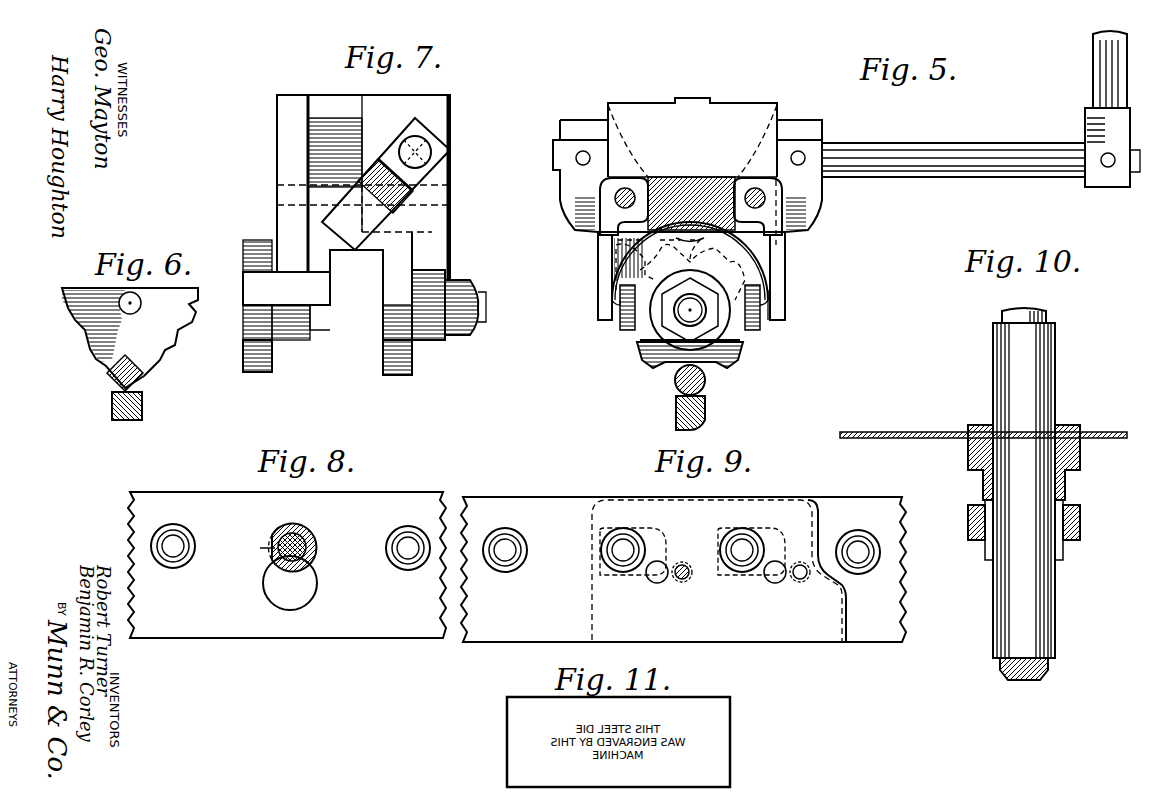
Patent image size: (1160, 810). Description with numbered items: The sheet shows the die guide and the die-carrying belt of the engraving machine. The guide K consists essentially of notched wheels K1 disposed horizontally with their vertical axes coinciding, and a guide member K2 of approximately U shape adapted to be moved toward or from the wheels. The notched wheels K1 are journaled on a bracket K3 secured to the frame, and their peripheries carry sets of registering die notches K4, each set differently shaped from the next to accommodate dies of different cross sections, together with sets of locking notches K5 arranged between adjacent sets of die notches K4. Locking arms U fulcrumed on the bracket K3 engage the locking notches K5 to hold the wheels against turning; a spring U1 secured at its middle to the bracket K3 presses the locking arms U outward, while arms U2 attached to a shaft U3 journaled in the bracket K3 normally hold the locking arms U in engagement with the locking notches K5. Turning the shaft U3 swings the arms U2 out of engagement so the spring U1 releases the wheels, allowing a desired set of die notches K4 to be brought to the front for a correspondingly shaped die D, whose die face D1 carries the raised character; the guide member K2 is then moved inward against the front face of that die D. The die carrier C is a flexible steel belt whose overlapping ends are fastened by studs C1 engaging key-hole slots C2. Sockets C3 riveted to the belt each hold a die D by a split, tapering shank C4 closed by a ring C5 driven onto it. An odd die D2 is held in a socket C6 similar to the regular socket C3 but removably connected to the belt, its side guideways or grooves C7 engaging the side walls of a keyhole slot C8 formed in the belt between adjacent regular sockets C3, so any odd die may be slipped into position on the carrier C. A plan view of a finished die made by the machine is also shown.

In FIG. 7, the guide K is at (374, 180).
In FIG. 5, the guide K is at (687, 152).
In FIG. 7, the notched wheels K1 is at (375, 380).
In FIG. 6, the notched wheels K1 is at (72, 288).
In FIG. 5, the notched wheels K1 is at (740, 362).
In FIG. 6, the guide member K2 is at (112, 410).
In FIG. 5, the guide member K2 is at (676, 422).
In FIG. 7, the bracket K3 is at (290, 152).
In FIG. 5, the bracket K3 is at (657, 114).
In FIG. 6, the die notches K4 is at (200, 334).
In FIG. 5, the die notches K4 is at (745, 352).
In FIG. 6, the locking notches K5 is at (176, 374).
In FIG. 5, the locking notches K5 is at (652, 370).
In FIG. 7, the locking arms U is at (318, 290).
In FIG. 5, the locking arms U is at (1140, 75).
In FIG. 5, the spring U1 is at (740, 258).
In FIG. 7, the arms U2 is at (375, 226).
In FIG. 5, the arms U2 is at (810, 234).
In FIG. 7, the shaft U3 is at (422, 152).
In FIG. 5, the shaft U3 is at (898, 150).
In FIG. 6, the die D is at (118, 382).
In FIG. 5, the die D is at (676, 386).
In FIG. 8, the die D is at (408, 548).
In FIG. 9, the die D is at (623, 556).
In FIG. 10, the die D is at (1005, 370).
In FIG. 10, the die face D1 is at (1020, 680).
In FIG. 8, the odd die D2 is at (255, 547).
In FIG. 9, the die carrier C is at (489, 505).
In FIG. 10, the die carrier C is at (891, 434).
In FIG. 9, the studs C1 is at (803, 581).
In FIG. 9, the key-hole slots C2 is at (778, 565).
In FIG. 8, the sockets C3 is at (420, 568).
In FIG. 9, the sockets C3 is at (612, 536).
In FIG. 10, the sockets C3 is at (1078, 432).
In FIG. 10, the split shank C4 is at (985, 487).
In FIG. 10, the ring C5 is at (975, 541).
In FIG. 8, the socket for odd die C6 is at (304, 530).
In FIG. 8, the guideways or grooves C7 is at (310, 550).
In FIG. 8, the keyhole slot C8 is at (318, 582).